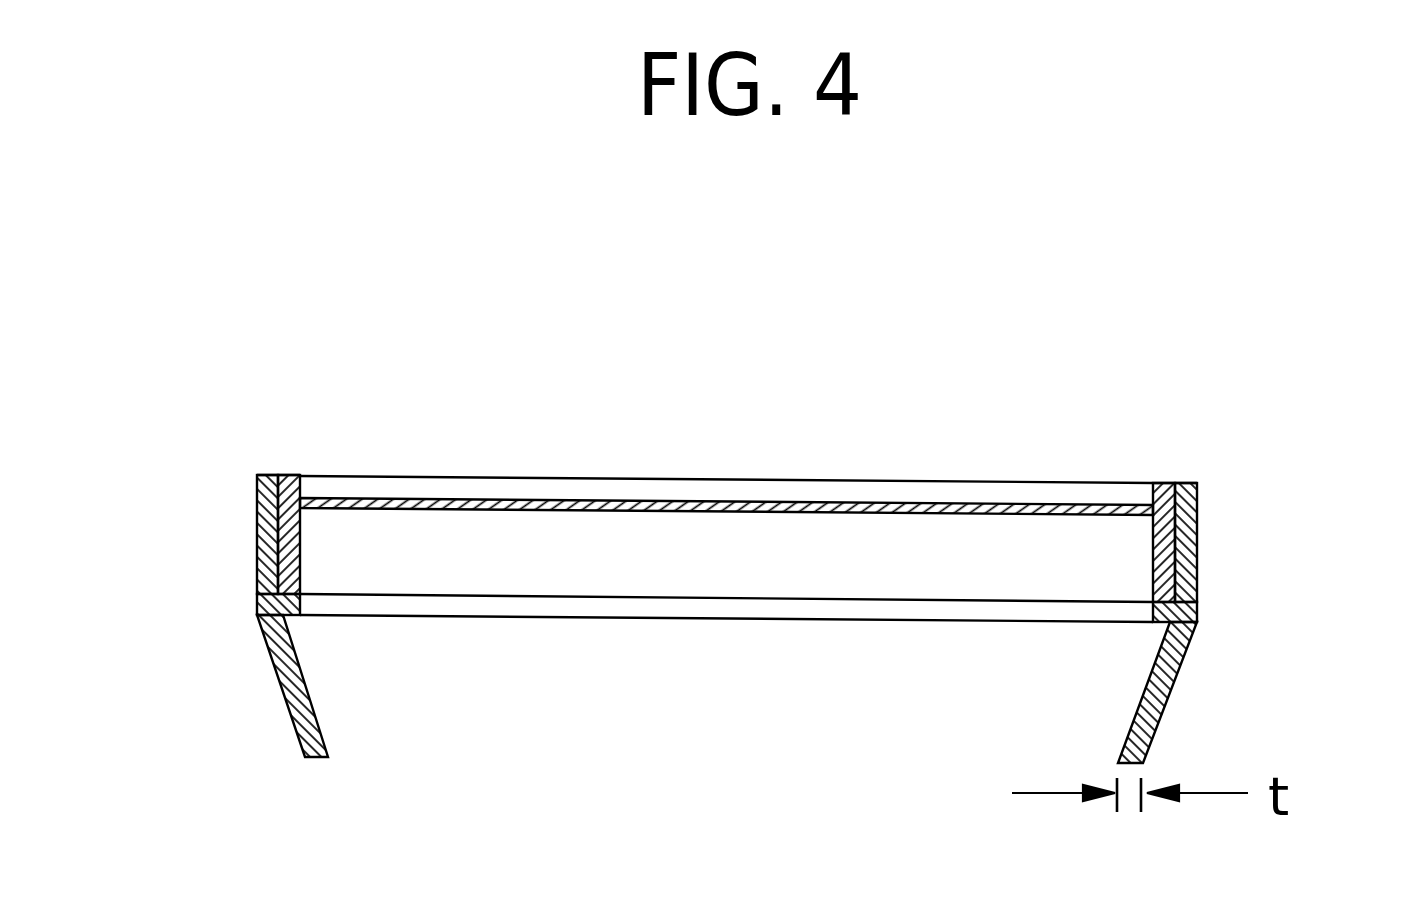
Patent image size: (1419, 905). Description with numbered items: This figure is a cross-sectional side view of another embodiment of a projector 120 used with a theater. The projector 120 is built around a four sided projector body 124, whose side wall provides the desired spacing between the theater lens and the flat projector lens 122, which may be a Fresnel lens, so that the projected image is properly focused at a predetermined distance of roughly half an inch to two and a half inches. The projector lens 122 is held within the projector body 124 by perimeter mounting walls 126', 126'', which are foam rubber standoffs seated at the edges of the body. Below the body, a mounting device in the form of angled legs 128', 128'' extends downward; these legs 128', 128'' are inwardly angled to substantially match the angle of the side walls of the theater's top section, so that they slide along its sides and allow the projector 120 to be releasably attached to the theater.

The projector 120 is at (1082, 451).
The projector lens 122 is at (790, 507).
The projector body 124 is at (257, 539).
The perimeter mounting wall 126' is at (736, 682).
The perimeter mounting wall 126'' is at (769, 415).
The angled leg 128' is at (226, 719).
The angled leg 128'' is at (1253, 692).